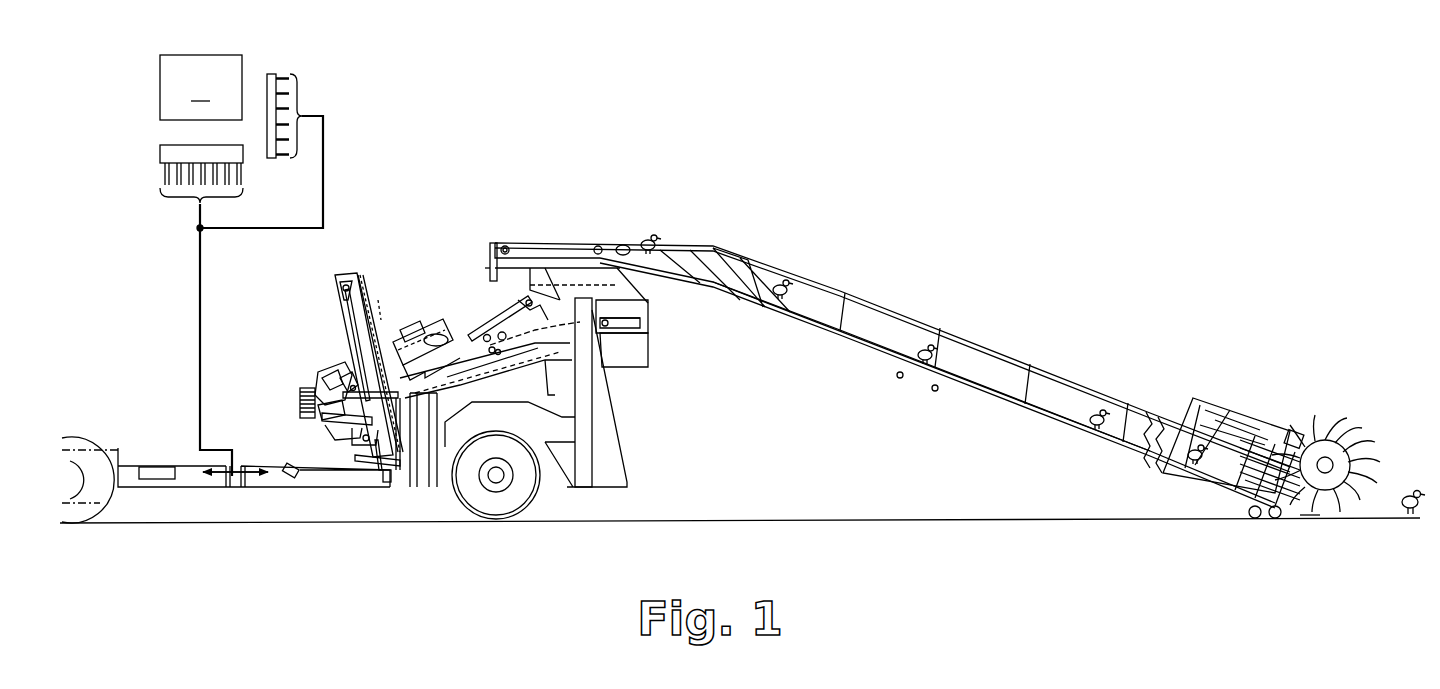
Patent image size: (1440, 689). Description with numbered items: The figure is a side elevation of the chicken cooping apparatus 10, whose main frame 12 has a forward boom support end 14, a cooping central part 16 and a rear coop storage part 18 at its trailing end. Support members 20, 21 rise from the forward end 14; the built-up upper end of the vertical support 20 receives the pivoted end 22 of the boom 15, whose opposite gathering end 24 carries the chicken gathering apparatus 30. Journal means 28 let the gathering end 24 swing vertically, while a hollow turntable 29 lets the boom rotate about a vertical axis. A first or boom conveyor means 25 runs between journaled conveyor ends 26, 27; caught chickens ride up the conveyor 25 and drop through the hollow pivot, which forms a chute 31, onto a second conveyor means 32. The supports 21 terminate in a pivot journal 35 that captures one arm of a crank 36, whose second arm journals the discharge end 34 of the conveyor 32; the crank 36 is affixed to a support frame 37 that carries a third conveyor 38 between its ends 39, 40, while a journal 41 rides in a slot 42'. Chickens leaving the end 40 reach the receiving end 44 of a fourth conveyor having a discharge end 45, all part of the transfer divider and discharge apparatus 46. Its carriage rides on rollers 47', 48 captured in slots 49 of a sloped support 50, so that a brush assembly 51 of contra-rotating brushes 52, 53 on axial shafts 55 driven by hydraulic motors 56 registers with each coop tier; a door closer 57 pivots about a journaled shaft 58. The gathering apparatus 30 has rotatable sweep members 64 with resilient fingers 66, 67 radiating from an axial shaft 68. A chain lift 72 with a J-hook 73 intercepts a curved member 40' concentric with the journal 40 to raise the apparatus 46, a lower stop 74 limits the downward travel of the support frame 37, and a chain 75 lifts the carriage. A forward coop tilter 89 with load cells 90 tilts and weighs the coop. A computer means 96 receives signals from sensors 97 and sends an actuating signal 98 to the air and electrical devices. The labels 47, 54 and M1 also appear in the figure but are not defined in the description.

The chicken cooping apparatus 10 is at (178, 262).
The main frame 12 is at (340, 480).
The forward boom support end 14 is at (627, 447).
The boom 15 is at (910, 390).
The cooping central part 16 is at (410, 256).
The rear coop storage part 18 is at (93, 440).
The support member 20 is at (580, 398).
The support member 21 is at (500, 365).
The boom pivoted end 22 is at (566, 240).
The boom gathering end 24 is at (1232, 403).
The boom conveyor means 25 is at (988, 394).
The journaled conveyor end 26 is at (166, 464).
The journaled conveyor end 27 is at (1278, 520).
The journal means 28 is at (504, 243).
The hollow turntable 29 is at (489, 250).
The chicken gathering apparatus 30 is at (1356, 424).
The chute 31 is at (575, 290).
The second conveyor means 32 is at (602, 307).
The discharge end of second conveyor 34 is at (505, 346).
The pivot journal 35 is at (525, 310).
The crank 36 is at (498, 302).
The support frame 37 is at (432, 312).
The third conveyor 38 is at (452, 350).
The end of third conveyor 39 is at (484, 334).
The discharge end of third conveyor 40 is at (437, 373).
The curved member 40' is at (510, 424).
The journal 41 is at (630, 342).
The slot 42' is at (643, 329).
The receiving end of fourth conveyor 44 is at (413, 455).
The discharge end of fourth conveyor 45 is at (340, 423).
The transfer divider and discharge apparatus 46 is at (300, 360).
The chain 47 is at (363, 368).
The roller 47' is at (323, 269).
The roller 48 is at (370, 462).
The guide slot 49 is at (352, 314).
The sloped support 50 is at (333, 282).
The brush assembly 51 is at (298, 418).
The brush 52 is at (278, 383).
The brush 53 is at (290, 393).
The cutter housing 54 is at (302, 393).
The axial shaft 55 is at (300, 415).
The hydraulic motor 56 is at (320, 375).
The door closer 57 is at (318, 425).
The journaled shaft 58 is at (345, 378).
The rotatable sweep member 64 is at (1305, 522).
The resilient finger-like element 66 is at (1265, 440).
The resilient finger-like element 67 is at (1378, 463).
The axially located shaft 68 is at (1337, 430).
The chain lift 72 is at (379, 315).
The J-hook 73 is at (470, 460).
The lower stop 74 is at (468, 396).
The chain 75 is at (400, 455).
The forward coop tilter 89 is at (300, 490).
The load cell 90 is at (290, 468).
The computer means 96 is at (201, 87).
The sensor 97 is at (279, 74).
The actuating signal 98 is at (160, 155).
The motor M1 is at (1296, 430).